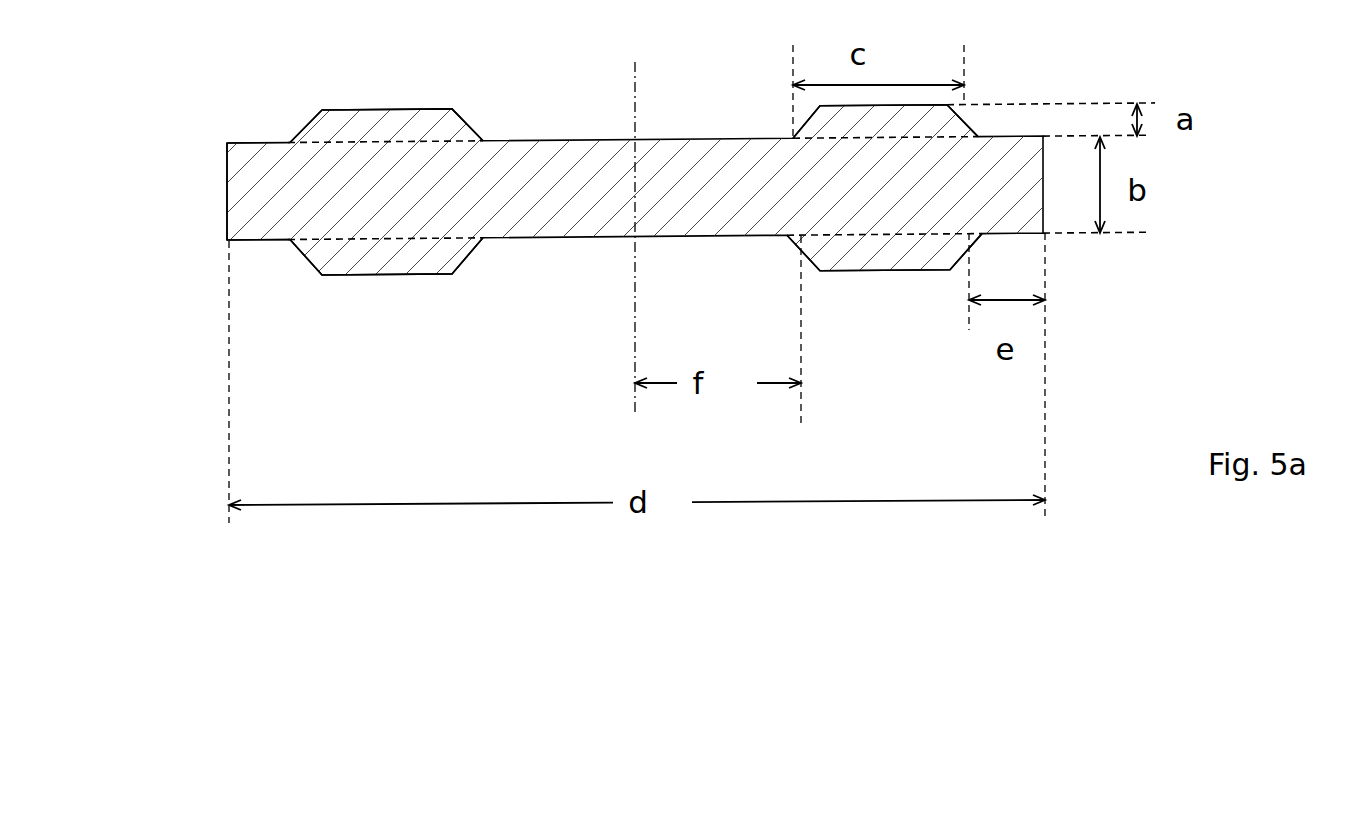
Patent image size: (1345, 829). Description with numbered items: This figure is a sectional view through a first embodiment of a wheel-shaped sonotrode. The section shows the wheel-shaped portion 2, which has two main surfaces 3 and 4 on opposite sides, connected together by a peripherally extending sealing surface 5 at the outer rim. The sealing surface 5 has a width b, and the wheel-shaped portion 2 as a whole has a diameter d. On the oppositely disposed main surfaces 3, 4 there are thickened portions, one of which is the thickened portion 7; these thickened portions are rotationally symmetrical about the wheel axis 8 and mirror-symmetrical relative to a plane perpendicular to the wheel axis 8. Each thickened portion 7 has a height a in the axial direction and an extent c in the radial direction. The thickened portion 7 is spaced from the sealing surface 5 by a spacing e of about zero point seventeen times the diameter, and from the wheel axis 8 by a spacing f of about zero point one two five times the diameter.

The wheel-shaped portion 2 is at (577, 210).
The main surface 3 is at (270, 143).
The main surface 4 is at (270, 242).
The sealing surface 5 is at (228, 188).
The thickened portion 7 is at (378, 122).
The wheel axis 8 is at (637, 285).